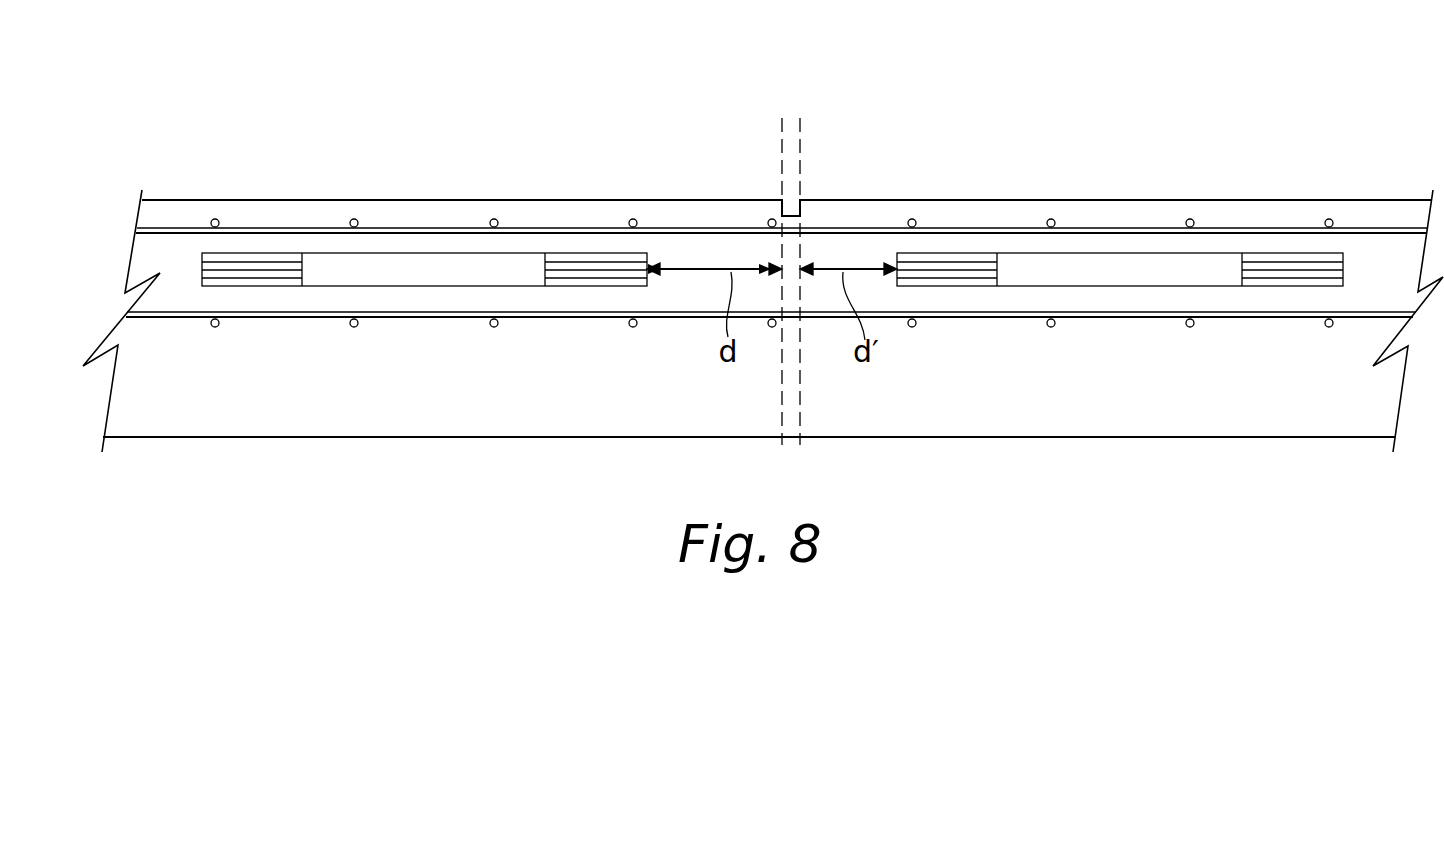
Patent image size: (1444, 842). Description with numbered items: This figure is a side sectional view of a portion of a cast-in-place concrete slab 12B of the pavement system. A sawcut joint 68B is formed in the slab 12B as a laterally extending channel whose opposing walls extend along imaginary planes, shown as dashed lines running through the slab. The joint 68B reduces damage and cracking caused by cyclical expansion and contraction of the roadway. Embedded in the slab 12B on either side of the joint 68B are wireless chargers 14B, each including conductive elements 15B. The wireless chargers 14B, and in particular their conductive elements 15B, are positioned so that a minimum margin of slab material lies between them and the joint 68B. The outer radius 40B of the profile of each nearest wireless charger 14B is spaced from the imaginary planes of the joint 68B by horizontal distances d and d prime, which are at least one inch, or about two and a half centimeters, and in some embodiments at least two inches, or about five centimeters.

The slab 12B is at (1272, 405).
The wireless charger 14B is at (297, 225).
The conductive element 15B is at (572, 267).
The outer radius 40B is at (647, 253).
The sawcut joint 68B is at (791, 88).